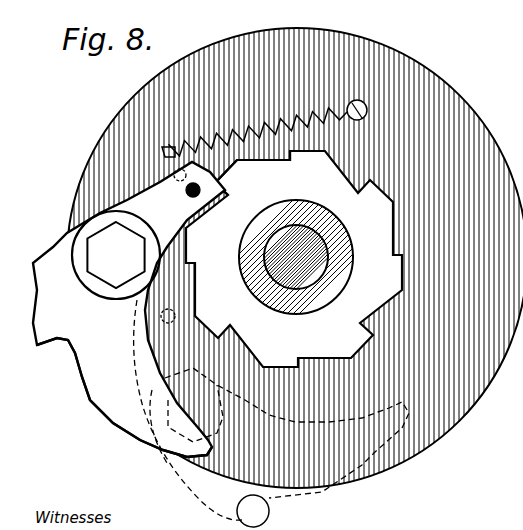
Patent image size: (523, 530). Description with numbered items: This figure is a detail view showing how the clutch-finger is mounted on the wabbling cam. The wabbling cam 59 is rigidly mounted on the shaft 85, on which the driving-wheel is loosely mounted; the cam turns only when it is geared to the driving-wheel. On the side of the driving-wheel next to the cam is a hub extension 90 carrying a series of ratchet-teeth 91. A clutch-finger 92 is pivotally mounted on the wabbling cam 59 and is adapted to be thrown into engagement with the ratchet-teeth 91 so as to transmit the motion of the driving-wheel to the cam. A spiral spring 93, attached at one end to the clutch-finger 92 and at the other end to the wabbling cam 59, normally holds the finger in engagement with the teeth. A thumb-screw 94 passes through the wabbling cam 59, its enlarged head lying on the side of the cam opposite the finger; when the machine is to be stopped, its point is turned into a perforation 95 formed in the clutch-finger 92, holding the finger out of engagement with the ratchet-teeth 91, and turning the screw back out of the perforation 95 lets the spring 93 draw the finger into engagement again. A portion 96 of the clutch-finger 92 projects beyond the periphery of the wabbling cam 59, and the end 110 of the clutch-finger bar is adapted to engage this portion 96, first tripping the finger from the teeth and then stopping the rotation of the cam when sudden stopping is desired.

The wabbling cam 59 is at (400, 63).
The shaft 85 is at (312, 240).
The hub extension 90 is at (297, 305).
The ratchet-teeth 91 is at (294, 252).
The clutch-finger 92 is at (57, 250).
The spiral spring 93 is at (302, 137).
The thumb-screw 94 is at (175, 182).
The perforation 95 is at (187, 191).
The portion of the clutch-finger 96 is at (80, 366).
The end of the clutch-finger bar 110 is at (270, 514).